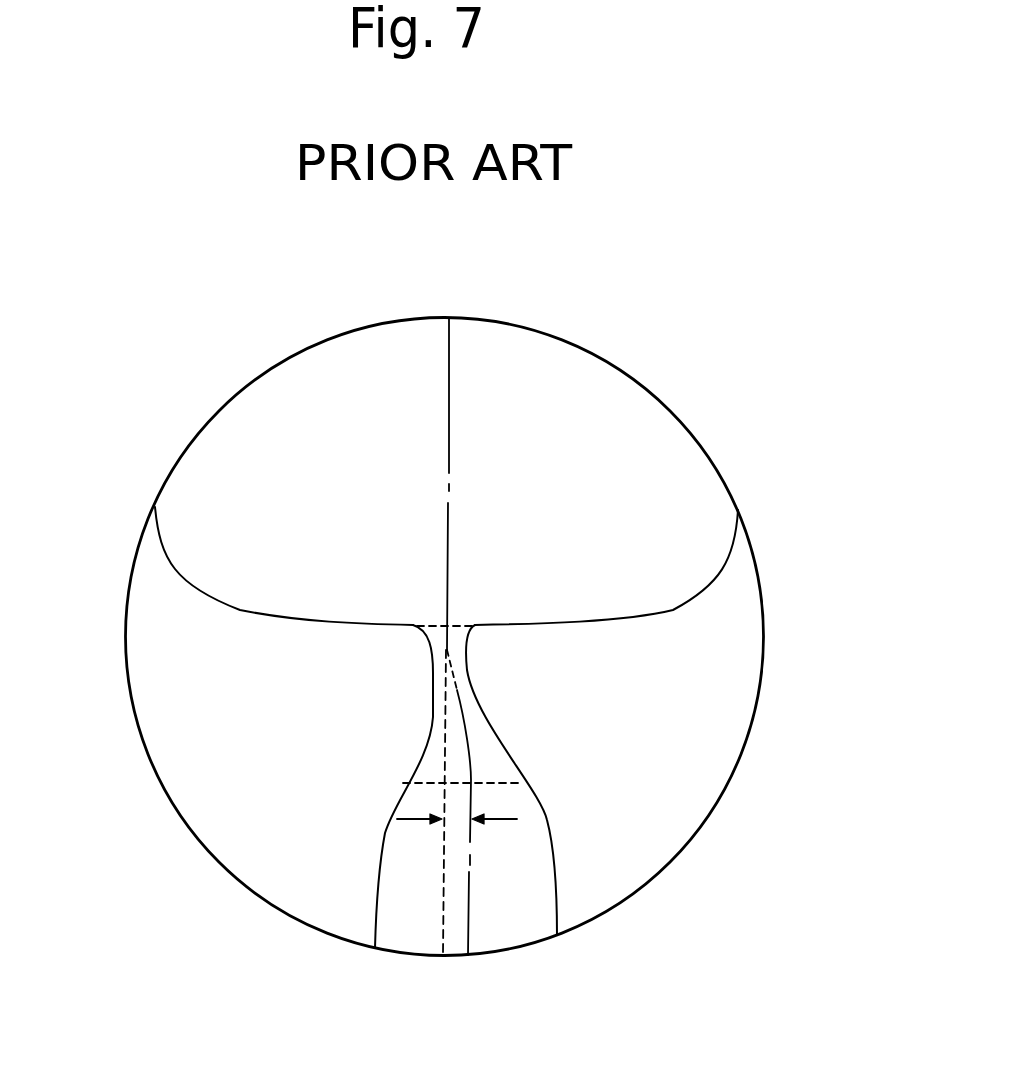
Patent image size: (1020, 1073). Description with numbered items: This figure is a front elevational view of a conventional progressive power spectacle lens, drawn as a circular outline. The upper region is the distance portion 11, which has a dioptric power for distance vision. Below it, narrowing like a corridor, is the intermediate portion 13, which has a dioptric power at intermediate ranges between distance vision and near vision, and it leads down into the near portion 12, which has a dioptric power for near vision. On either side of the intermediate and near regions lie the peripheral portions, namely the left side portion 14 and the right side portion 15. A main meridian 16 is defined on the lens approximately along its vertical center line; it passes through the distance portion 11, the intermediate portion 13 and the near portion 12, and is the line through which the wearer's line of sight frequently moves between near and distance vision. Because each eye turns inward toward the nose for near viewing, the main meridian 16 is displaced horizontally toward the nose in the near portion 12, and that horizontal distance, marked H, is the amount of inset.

The distance portion 11 is at (283, 423).
The near portion 12 is at (417, 858).
The intermediate portion 13 is at (477, 728).
The left side portion 14 is at (228, 738).
The right side portion 15 is at (668, 675).
The main meridian 16 is at (450, 453).